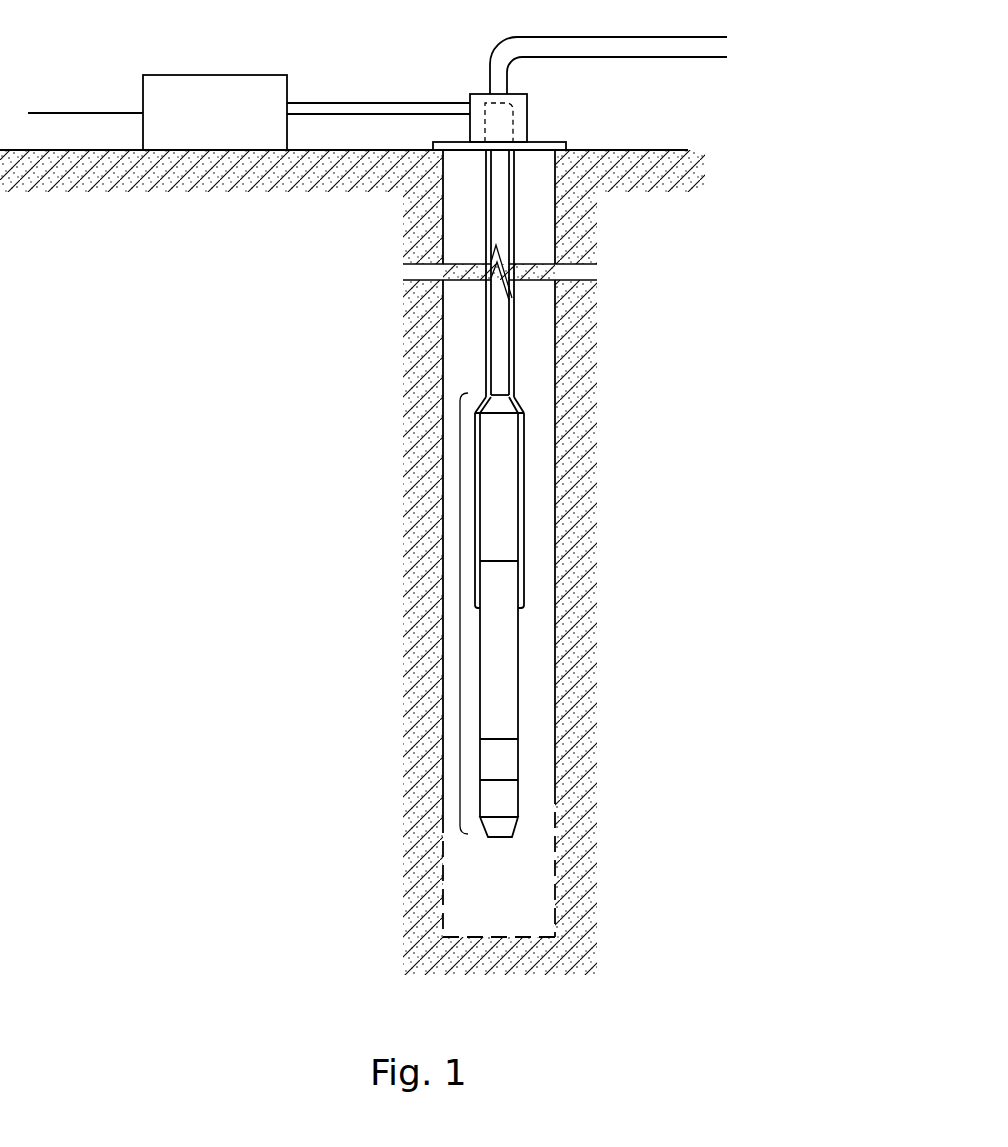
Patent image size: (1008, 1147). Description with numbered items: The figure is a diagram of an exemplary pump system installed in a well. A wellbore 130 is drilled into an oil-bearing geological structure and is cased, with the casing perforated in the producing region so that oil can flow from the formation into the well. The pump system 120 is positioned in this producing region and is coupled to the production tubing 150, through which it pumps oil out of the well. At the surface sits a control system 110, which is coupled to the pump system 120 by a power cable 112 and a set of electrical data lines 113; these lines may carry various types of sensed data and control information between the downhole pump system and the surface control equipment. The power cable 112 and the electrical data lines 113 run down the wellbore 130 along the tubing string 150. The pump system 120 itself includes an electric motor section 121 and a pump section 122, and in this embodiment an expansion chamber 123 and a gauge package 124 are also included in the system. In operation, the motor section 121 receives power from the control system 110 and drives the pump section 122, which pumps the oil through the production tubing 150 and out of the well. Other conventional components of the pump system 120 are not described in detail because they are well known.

The control system 110 is at (215, 75).
The power cable 112 is at (375, 110).
The electrical data lines 113 is at (427, 101).
The production tubing 150 is at (512, 343).
The pump system 120 is at (457, 612).
The pump section 122 is at (522, 433).
The electric motor section 121 is at (520, 650).
The expansion chamber 123 is at (518, 762).
The gauge package 124 is at (518, 806).
The wellbore 130 is at (556, 508).